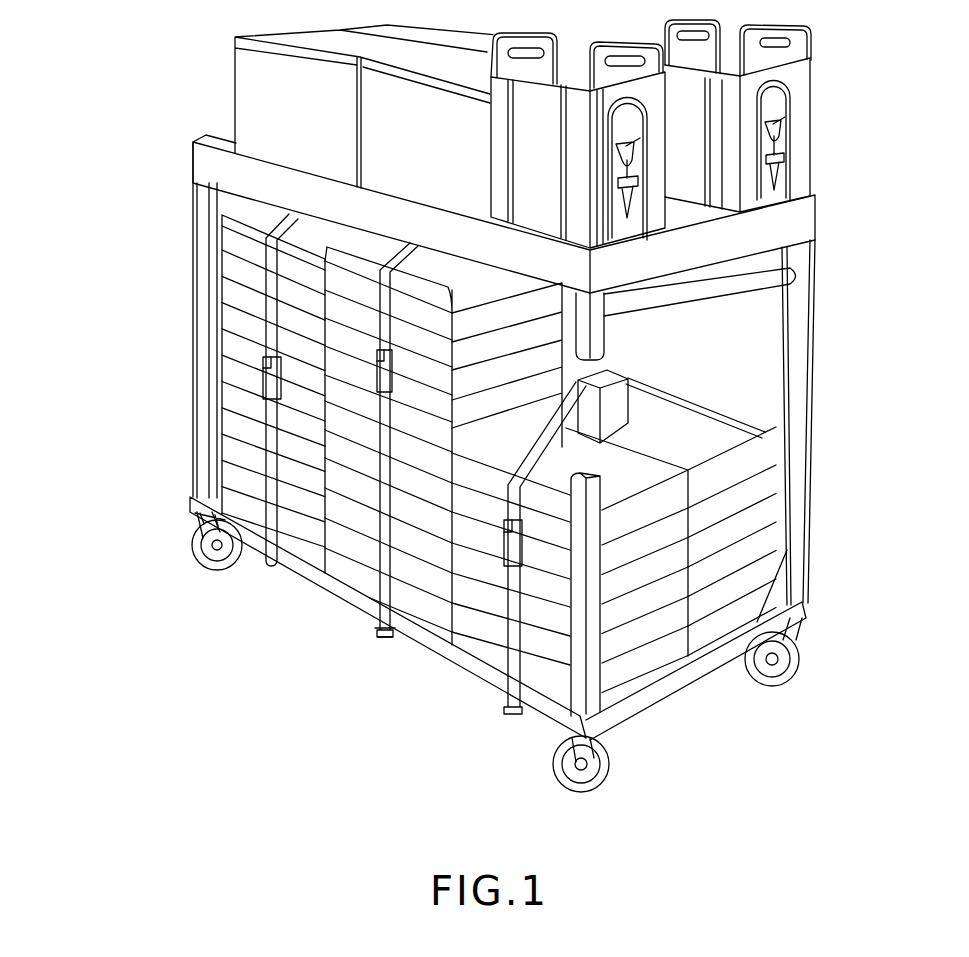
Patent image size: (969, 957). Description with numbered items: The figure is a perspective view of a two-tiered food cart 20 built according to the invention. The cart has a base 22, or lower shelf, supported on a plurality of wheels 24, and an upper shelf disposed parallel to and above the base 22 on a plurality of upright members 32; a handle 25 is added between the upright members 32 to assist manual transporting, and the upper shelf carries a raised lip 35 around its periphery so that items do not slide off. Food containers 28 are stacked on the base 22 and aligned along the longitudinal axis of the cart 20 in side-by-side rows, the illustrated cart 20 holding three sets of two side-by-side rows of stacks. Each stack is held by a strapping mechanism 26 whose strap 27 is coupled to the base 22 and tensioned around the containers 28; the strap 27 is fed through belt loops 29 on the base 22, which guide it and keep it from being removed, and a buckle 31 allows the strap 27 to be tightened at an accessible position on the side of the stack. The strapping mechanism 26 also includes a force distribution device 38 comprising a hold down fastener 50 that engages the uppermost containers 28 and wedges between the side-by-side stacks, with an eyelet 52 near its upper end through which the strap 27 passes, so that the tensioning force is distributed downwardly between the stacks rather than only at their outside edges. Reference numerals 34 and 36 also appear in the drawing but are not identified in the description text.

The two-tiered food cart 20 is at (152, 387).
The base 22 is at (443, 650).
The wheels 24 is at (213, 573).
The handle 25 is at (795, 282).
The strapping mechanism 26 is at (377, 585).
The strap 27 is at (268, 440).
The food containers 28 is at (237, 252).
The belt loops 29 is at (400, 643).
The buckle 31 is at (270, 388).
The upright members 32 is at (200, 315).
The corner post 34 is at (608, 688).
The lip 35 is at (207, 173).
The caster mount 36 is at (203, 528).
The force distribution device 38 is at (633, 412).
The hold down fastener 50 is at (623, 373).
The eyelet 52 is at (690, 420).